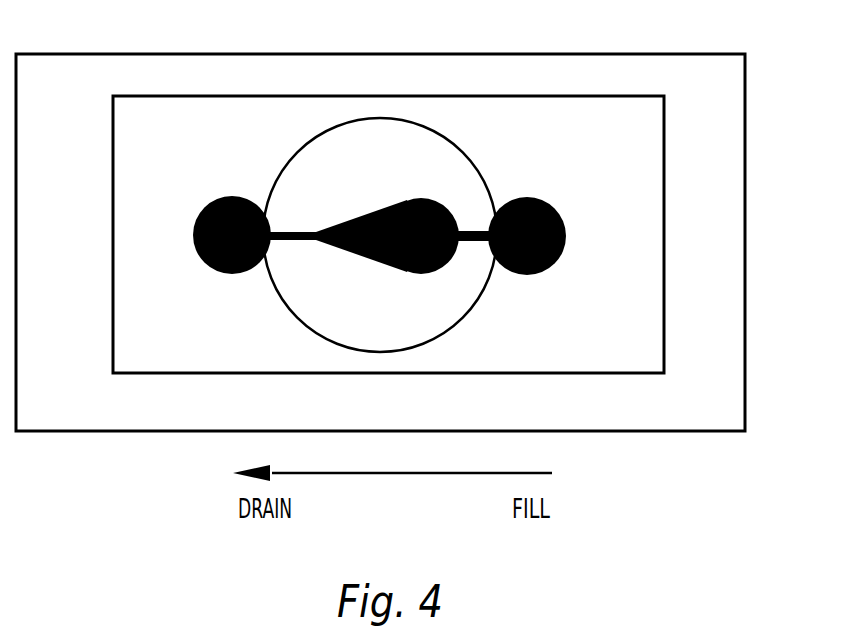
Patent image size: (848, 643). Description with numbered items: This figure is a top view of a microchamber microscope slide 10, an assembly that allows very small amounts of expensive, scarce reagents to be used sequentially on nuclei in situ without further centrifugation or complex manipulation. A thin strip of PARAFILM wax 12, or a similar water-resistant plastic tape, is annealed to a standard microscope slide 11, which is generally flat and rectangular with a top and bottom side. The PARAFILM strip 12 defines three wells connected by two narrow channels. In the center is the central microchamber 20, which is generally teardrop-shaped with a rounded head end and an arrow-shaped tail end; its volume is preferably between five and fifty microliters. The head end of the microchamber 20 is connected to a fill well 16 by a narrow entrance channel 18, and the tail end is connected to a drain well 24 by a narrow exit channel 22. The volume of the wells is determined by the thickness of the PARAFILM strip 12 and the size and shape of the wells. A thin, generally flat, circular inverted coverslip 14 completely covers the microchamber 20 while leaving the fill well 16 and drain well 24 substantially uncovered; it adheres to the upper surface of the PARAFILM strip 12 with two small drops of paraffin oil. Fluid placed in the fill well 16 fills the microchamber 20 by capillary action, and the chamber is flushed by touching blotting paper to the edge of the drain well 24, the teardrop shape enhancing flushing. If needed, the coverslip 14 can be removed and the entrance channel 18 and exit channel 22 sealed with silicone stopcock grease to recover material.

The microchamber microscope slide 10 is at (424, 220).
The microscope slide 11 is at (688, 55).
The PARAFILM strip 12 is at (238, 99).
The coverslip 14 is at (433, 125).
The fill well 16 is at (549, 200).
The entrance channel 18 is at (476, 243).
The central microchamber 20 is at (444, 202).
The exit channel 22 is at (302, 241).
The drain well 24 is at (201, 258).